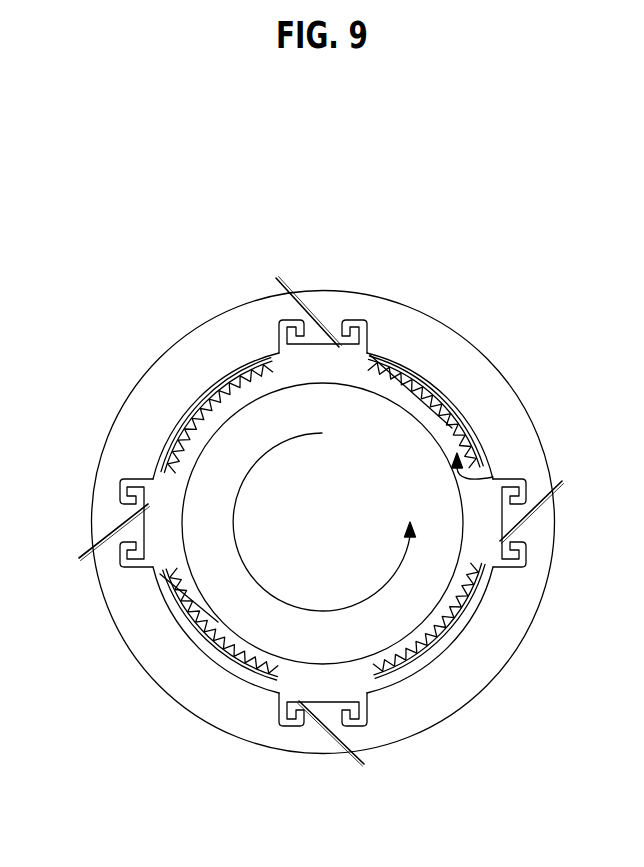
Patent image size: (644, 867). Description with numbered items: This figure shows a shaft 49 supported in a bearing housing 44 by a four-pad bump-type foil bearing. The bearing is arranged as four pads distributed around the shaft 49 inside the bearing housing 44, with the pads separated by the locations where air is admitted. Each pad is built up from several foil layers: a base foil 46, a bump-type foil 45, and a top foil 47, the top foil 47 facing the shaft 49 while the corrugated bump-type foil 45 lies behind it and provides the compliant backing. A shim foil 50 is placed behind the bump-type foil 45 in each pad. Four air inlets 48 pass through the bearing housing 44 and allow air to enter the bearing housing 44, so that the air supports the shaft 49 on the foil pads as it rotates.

The bearing housing 44 is at (419, 334).
The bump-type foil 45 is at (381, 360).
The base foil 46 is at (463, 427).
The top foil 47 is at (484, 474).
The air inlet 48 is at (560, 498).
The shaft 49 is at (343, 627).
The shim foil 50 is at (450, 392).